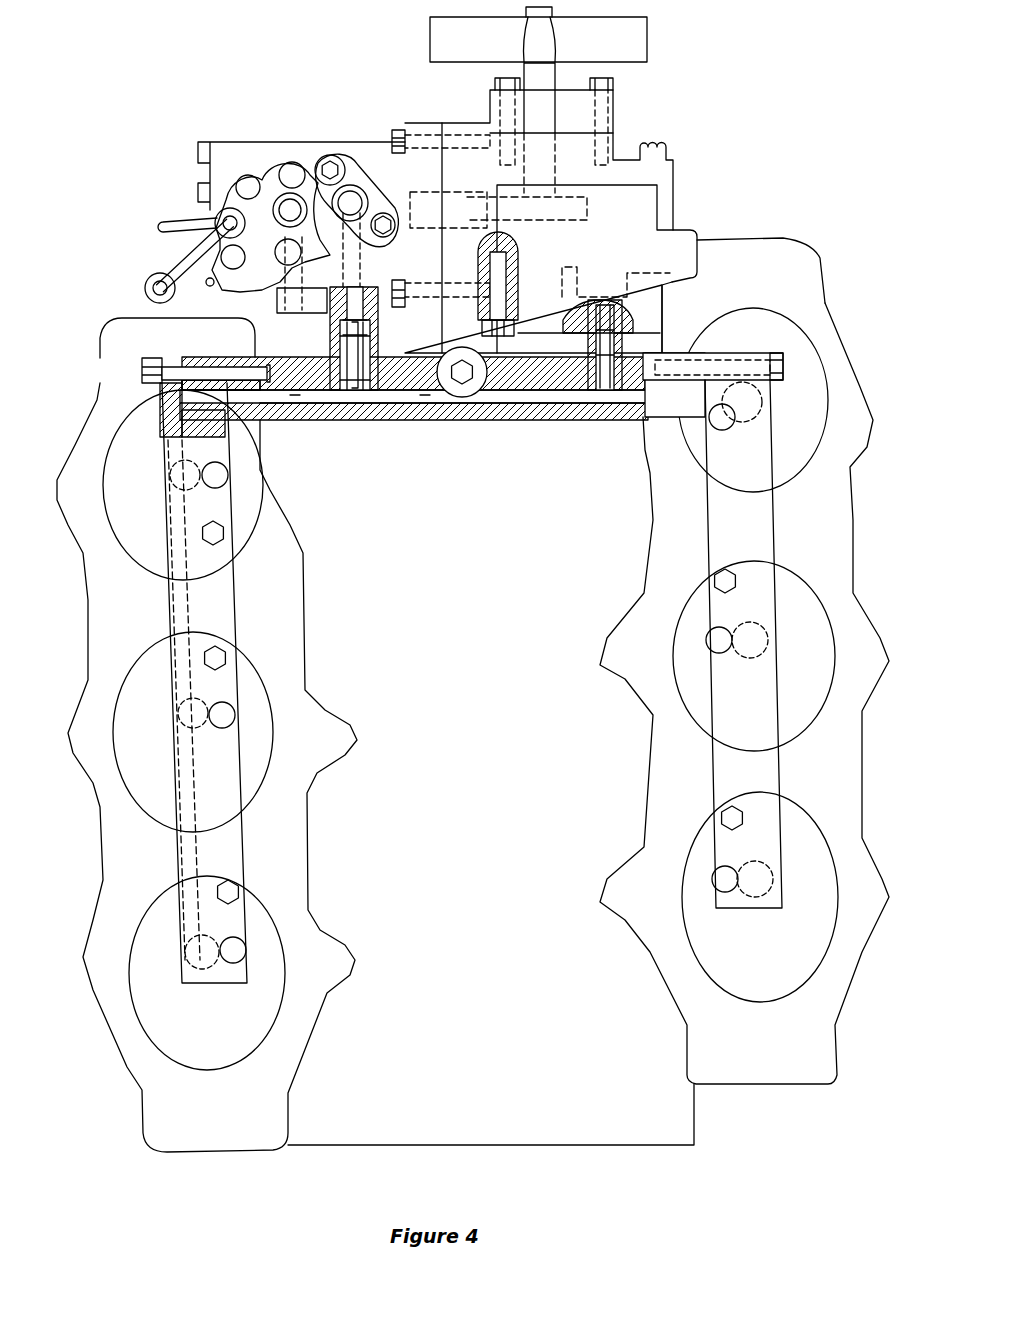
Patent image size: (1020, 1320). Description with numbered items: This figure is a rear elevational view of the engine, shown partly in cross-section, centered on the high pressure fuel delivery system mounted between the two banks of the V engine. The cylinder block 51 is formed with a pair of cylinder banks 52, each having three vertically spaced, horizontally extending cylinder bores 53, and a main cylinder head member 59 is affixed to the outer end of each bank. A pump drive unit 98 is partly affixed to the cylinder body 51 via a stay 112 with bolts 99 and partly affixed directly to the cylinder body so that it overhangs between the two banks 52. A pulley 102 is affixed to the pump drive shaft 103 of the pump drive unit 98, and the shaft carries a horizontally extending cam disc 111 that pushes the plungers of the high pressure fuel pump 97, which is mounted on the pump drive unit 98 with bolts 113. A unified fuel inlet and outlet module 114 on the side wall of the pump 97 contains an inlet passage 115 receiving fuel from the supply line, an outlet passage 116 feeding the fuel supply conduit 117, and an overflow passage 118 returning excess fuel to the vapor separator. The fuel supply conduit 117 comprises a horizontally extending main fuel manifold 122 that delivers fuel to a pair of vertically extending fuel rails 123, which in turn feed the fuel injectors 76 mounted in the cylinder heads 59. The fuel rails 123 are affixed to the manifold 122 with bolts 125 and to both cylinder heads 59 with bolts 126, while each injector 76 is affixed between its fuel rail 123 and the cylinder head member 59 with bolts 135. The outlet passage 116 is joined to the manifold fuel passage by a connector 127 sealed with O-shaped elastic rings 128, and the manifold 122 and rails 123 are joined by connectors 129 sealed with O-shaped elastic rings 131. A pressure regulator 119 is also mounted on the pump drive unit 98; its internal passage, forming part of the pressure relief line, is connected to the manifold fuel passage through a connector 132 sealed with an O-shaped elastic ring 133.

The cylinder block 51 is at (497, 710).
The cylinder bank 52 is at (322, 1066).
The cylinder bore 53 is at (120, 520).
The cylinder head member 59 is at (785, 258).
The fuel injector 76 is at (180, 462).
The high pressure fuel pump 97 is at (245, 140).
The pump drive unit 98 is at (673, 162).
The bolt 99 is at (495, 372).
The pulley 102 is at (648, 35).
The pump drive shaft 103 is at (560, 72).
The cam disc 111 is at (587, 197).
The stay 112 is at (455, 195).
The bolt 113 is at (395, 130).
The fuel inlet and outlet module 114 is at (263, 165).
The inlet passage 115 is at (190, 218).
The outlet passage 116 is at (330, 322).
The fuel supply conduit 117 is at (245, 852).
The overflow passage 118 is at (160, 283).
The pressure regulator 119 is at (640, 218).
The main fuel manifold 122 is at (460, 412).
The fuel rail 123 is at (165, 625).
The bolt 125 is at (783, 368).
The bolt 126 is at (218, 540).
The connector 127 is at (355, 410).
The O-shaped elastic ring 128 is at (400, 405).
The connector 129 is at (233, 385).
The O-shaped elastic ring 131 is at (632, 308).
The connector 132 is at (610, 395).
The O-shaped elastic ring 133 is at (583, 400).
The bolt 135 is at (228, 478).